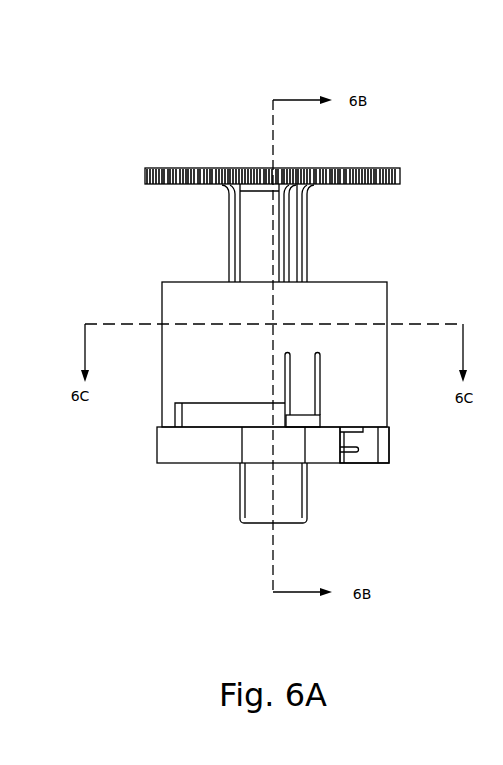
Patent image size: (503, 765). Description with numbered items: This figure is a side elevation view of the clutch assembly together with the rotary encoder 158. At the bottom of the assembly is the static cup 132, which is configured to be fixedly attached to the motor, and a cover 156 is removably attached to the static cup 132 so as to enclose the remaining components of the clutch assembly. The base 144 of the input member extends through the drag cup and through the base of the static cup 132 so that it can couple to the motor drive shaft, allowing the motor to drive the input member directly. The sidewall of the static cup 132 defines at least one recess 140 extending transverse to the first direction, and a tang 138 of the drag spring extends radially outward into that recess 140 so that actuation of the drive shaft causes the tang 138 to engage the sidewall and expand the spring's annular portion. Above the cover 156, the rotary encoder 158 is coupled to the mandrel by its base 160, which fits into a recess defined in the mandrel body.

The rotary encoder 158 is at (210, 178).
The base of the rotary encoder 160 is at (248, 250).
The cover 156 is at (173, 305).
The static cup 132 is at (180, 447).
The tang 138 is at (387, 442).
The recess 140 is at (347, 463).
The base of the input member 144 is at (260, 490).